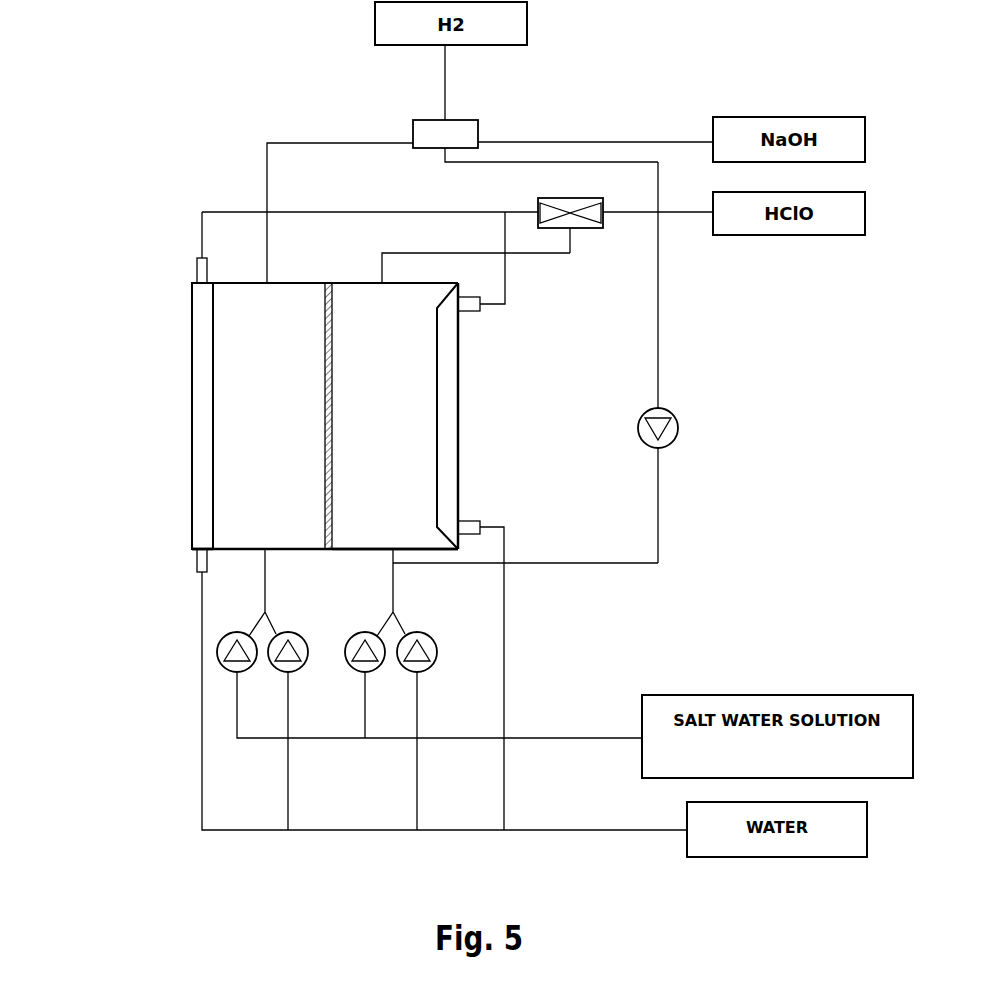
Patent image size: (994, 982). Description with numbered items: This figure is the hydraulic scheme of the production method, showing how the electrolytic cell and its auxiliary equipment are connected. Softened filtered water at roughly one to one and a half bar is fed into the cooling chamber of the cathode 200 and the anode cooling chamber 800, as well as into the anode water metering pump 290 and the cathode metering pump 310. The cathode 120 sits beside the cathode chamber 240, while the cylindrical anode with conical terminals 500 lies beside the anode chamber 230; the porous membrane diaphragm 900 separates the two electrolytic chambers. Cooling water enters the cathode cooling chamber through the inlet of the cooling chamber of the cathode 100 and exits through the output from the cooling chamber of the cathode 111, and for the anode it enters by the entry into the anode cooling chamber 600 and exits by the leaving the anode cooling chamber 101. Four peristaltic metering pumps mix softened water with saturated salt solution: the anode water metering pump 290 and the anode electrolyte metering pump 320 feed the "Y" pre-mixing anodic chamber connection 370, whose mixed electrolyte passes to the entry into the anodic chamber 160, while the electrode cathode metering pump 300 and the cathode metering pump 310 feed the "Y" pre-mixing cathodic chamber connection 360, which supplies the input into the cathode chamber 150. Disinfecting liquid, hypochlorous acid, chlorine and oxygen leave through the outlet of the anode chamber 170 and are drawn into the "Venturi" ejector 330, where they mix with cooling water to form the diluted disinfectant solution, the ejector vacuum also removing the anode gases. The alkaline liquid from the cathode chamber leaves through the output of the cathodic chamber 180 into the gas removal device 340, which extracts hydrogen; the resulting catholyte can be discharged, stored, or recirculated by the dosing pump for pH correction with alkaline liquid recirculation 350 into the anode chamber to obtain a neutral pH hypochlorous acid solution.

The output from the cooling chamber of the cathode 111 is at (197, 263).
The cooling chamber of the cathode 200 is at (200, 303).
The cathode 120 is at (210, 428).
The cathode chamber 240 is at (237, 488).
The leaving the anode cooling chamber 101 is at (197, 553).
The porous membrane diaphragm 900 is at (332, 367).
The anode cooling chamber 800 is at (445, 423).
The cylindrical anode with conical terminals 500 is at (438, 458).
The anode chamber 230 is at (427, 492).
The inlet of the cooling chamber of the cathode 100 is at (482, 301).
The entry into the anode cooling chamber 600 is at (482, 520).
The output of the cathodic chamber 180 is at (274, 281).
The outlet of the anode chamber 170 is at (380, 280).
The gas removal device 340 is at (432, 145).
The "Venturi" ejector 330 is at (548, 199).
The dosing pump for pH correction with alkaline liquid recirculation 350 is at (677, 412).
The "Y" pre-mixing cathodic chamber connection 360 is at (262, 601).
The input into the cathode chamber 150 is at (267, 561).
The entry into the anodic chamber 160 is at (392, 556).
The "Y" pre-mixing anodic chamber connection 370 is at (393, 611).
The electrode cathode metering pump 300 is at (218, 648).
The cathode metering pump 310 is at (299, 636).
The anode electrolyte metering pump 320 is at (355, 636).
The anode water metering pump 290 is at (437, 648).